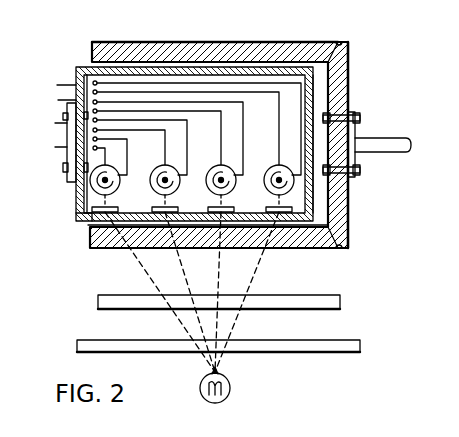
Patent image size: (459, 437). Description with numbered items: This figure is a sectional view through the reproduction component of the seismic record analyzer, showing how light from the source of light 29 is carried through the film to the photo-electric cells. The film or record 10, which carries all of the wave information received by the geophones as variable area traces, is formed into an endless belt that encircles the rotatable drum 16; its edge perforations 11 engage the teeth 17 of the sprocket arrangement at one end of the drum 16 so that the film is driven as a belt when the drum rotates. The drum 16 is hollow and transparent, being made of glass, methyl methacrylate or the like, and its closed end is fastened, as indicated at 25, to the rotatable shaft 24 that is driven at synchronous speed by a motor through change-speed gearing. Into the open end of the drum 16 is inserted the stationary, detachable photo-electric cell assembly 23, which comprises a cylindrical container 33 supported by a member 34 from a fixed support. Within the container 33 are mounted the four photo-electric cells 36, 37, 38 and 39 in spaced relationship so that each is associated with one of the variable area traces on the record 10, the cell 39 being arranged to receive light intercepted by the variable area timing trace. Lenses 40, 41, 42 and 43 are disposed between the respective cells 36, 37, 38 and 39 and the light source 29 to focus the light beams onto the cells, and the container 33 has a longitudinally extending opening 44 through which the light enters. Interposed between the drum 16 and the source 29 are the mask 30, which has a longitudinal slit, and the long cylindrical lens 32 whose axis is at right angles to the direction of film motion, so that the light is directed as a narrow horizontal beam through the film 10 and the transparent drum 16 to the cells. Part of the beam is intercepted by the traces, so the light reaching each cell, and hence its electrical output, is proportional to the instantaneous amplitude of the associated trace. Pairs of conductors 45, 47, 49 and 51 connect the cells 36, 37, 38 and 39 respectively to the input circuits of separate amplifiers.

The film or record 10 is at (194, 42).
The rotatable drum 16 is at (247, 42).
The edge perforations 11 is at (333, 42).
The teeth 17 is at (339, 43).
The cylindrical container 33 is at (82, 66).
The photo-electric cell assembly 23 is at (314, 102).
The rotatable shaft 24 is at (372, 140).
The fastening of drum to shaft 25 is at (357, 158).
The supporting member 34 is at (72, 179).
The pair of conductors 45 is at (62, 85).
The pair of electrical conductors 47 is at (64, 101).
The pair of conductors 49 is at (61, 123).
The pair of electrical conductors 51 is at (61, 146).
The photo-electric cell 36 is at (270, 168).
The photo-electric cell 37 is at (233, 168).
The photo-electric cell 38 is at (177, 171).
The photo-electric cell 39 is at (117, 171).
The lens 40 is at (270, 206).
The lens 41 is at (236, 207).
The lens 42 is at (177, 207).
The lens 43 is at (119, 207).
The longitudinally extending opening 44 is at (92, 224).
The cylindrical lens 32 is at (333, 306).
The mask 30 is at (350, 350).
The source of light 29 is at (231, 384).